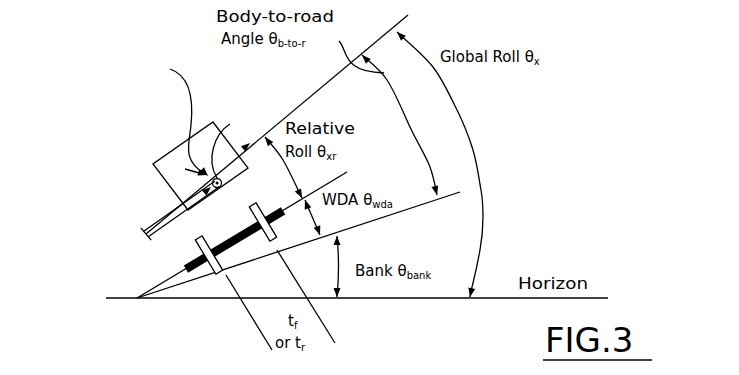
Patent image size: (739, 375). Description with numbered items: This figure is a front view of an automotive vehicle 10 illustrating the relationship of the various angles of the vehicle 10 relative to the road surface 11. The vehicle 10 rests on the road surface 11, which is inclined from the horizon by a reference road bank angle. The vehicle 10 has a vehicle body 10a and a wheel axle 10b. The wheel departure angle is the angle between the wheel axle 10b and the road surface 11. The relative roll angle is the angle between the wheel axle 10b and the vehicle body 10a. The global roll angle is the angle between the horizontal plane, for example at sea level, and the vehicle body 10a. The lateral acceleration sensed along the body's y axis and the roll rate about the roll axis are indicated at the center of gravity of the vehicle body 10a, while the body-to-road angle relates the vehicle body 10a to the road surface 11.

The vehicle 10 is at (218, 156).
The vehicle body 10a is at (160, 165).
The wheel axle 10b is at (254, 208).
The road surface 11 is at (380, 219).